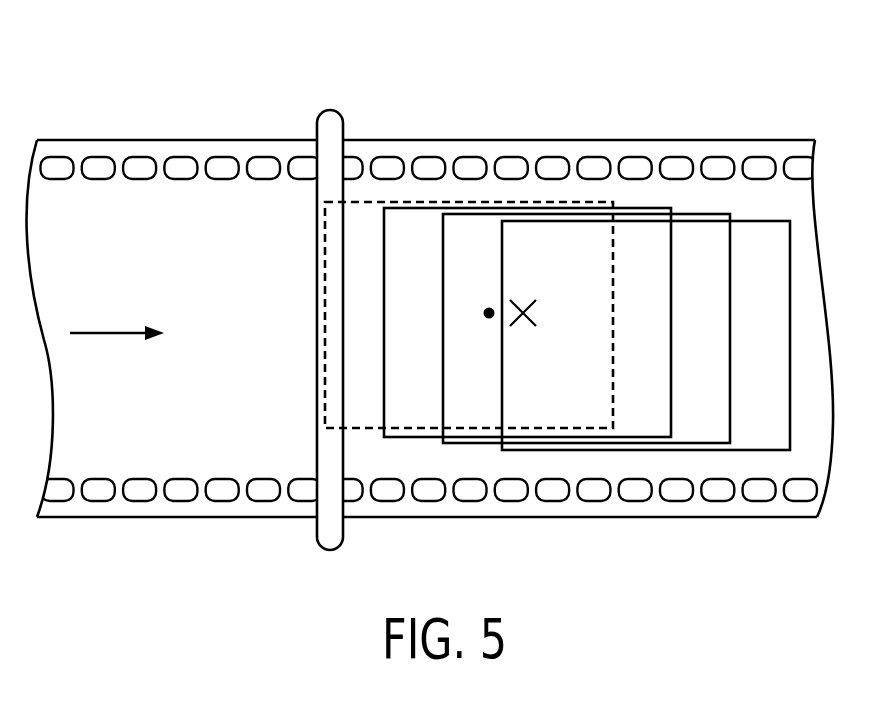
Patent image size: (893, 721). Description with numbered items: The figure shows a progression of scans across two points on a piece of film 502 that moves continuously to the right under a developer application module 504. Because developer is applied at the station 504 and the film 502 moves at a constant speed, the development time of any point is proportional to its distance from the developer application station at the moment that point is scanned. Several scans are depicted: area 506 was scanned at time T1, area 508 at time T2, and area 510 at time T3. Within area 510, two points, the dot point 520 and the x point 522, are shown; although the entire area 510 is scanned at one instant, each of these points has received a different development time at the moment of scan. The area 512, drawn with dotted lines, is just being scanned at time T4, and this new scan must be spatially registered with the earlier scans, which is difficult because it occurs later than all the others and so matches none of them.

The film 502 is at (482, 140).
The developer application module 504 is at (328, 110).
The area scanned at time T1 506 is at (780, 219).
The area scanned at time T2 508 is at (698, 214).
The area scanned at time T3 510 is at (637, 207).
The area scanned at time T4 512 is at (551, 200).
The dot point 520 is at (489, 313).
The x point 522 is at (523, 318).